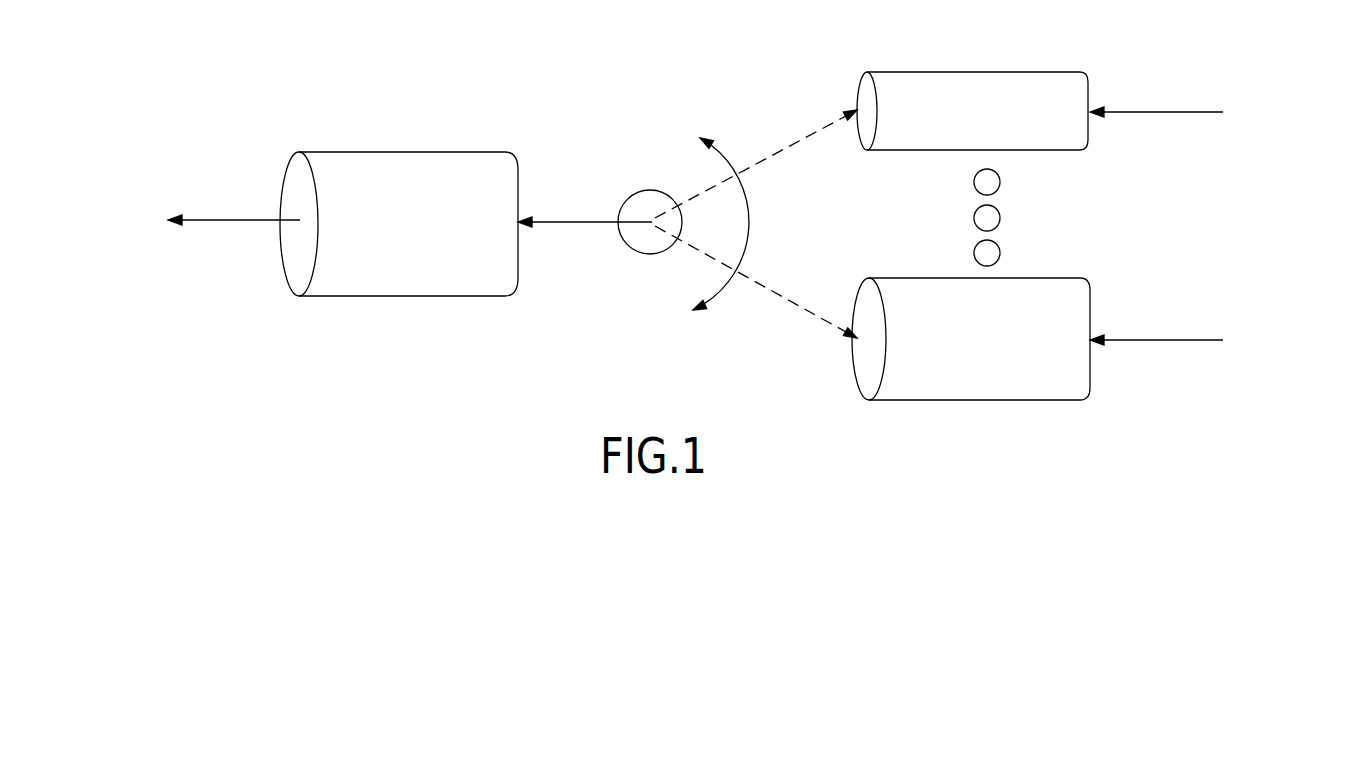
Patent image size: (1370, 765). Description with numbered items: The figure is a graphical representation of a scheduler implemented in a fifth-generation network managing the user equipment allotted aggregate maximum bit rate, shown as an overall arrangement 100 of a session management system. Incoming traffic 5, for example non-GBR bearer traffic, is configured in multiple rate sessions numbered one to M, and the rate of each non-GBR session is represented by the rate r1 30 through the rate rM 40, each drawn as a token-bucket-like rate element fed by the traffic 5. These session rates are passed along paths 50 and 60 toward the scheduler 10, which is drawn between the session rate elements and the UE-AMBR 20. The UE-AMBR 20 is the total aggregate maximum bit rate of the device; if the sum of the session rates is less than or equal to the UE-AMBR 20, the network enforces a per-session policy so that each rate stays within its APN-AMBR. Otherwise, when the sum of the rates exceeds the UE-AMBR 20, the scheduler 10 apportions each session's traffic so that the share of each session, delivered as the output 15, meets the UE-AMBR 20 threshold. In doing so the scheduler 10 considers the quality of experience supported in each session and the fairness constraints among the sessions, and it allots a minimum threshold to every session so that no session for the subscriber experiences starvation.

The traffic 5 is at (1165, 110).
The scheduler 10 is at (643, 102).
The output 15 is at (250, 222).
The UE-AMBR 20 is at (440, 297).
The rate r1 30 is at (920, 72).
The rate rM 40 is at (923, 278).
The first bearer data path b1 50 is at (770, 157).
The M-th bearer data path bM 60 is at (767, 287).
The scheduling system 100 is at (1259, 163).